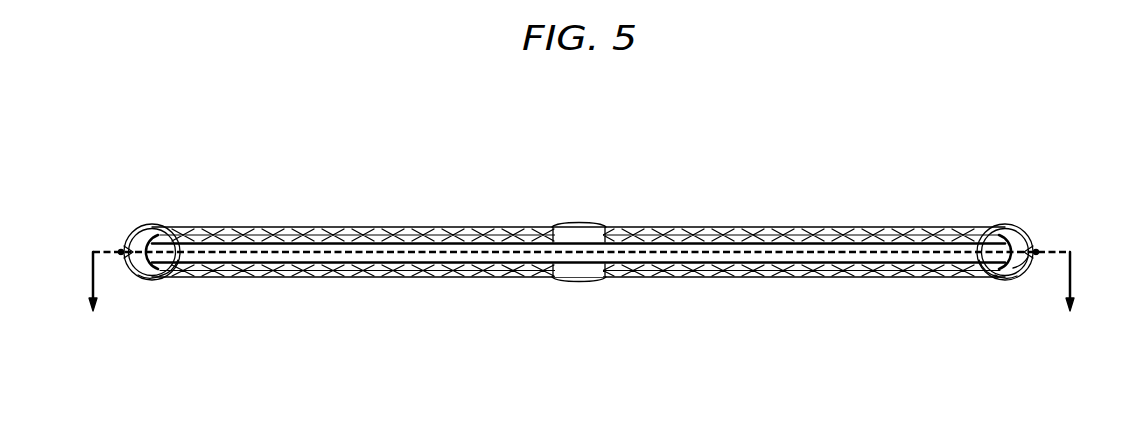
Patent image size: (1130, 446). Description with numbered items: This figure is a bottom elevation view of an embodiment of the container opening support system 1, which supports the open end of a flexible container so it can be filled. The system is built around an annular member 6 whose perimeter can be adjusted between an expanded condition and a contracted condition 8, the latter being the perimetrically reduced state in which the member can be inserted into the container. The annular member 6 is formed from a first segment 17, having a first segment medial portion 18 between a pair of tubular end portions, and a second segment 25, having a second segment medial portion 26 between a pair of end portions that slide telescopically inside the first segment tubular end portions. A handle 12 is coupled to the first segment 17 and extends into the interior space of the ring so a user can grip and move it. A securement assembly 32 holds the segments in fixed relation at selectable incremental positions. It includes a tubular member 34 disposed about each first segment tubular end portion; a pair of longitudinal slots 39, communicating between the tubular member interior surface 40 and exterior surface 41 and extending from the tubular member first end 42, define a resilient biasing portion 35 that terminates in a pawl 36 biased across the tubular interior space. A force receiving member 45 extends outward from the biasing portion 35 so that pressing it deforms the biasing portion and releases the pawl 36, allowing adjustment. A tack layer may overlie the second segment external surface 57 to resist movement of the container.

The container opening support system 1 is at (578, 209).
The annular member 6 is at (277, 210).
The contracted condition 8 is at (581, 296).
The handle 12 is at (590, 279).
The first segment 17 is at (670, 222).
The first segment medial portion 18 is at (606, 226).
The second segment 25 is at (430, 266).
The second segment medial portion 26 is at (637, 256).
The securement assembly 32 is at (155, 218).
The tubular member 34 is at (133, 231).
The biasing portion 35 is at (120, 251).
The pawl 36 is at (147, 280).
The longitudinal slots 39 is at (130, 240).
The tubular member interior surface 40 is at (993, 226).
The tubular member exterior surface 41 is at (1023, 275).
The tubular member first end 42 is at (165, 277).
The force receiving member 45 is at (124, 258).
The second segment external surface 57 is at (794, 279).